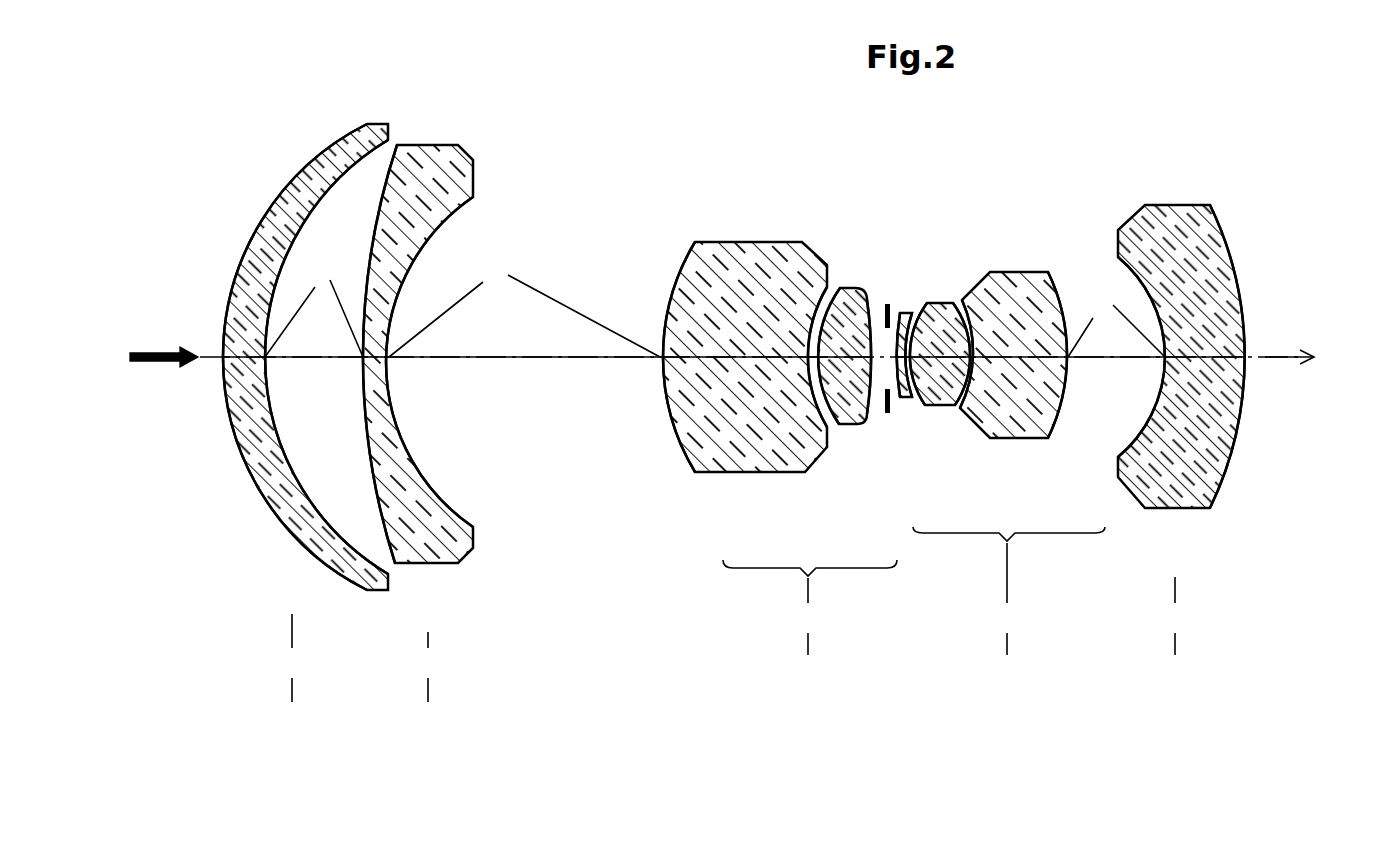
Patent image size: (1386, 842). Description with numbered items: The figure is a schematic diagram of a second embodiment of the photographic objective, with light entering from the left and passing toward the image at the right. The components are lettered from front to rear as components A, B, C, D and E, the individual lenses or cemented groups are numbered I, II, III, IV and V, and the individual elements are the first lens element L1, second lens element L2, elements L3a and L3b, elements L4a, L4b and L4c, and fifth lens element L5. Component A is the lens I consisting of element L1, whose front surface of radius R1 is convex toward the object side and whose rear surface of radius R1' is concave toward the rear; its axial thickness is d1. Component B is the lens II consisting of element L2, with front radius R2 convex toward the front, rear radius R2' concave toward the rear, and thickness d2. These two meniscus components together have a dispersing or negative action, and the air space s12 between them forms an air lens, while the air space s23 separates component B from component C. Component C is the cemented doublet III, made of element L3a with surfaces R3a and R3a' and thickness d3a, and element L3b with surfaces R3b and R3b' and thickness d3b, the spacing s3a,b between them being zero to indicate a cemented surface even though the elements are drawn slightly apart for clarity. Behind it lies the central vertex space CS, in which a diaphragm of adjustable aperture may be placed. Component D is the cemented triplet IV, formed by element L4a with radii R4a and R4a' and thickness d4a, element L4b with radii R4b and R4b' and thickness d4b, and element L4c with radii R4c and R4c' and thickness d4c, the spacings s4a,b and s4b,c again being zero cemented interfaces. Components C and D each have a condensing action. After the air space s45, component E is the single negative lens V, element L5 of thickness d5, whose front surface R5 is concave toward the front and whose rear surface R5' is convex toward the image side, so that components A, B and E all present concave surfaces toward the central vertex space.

The first lens element L1 is at (292, 515).
The second lens element L2 is at (428, 540).
The third-a lens element L3a is at (745, 455).
The third-b lens element L3b is at (850, 427).
The fourth-a lens element L4a is at (905, 405).
The fourth-b lens element L4b is at (945, 408).
The fourth-c lens element L4c is at (1040, 440).
The fifth lens element L5 is at (1175, 478).
The front surface radius of first element R1 is at (295, 357).
The rear surface radius of first element R1' is at (328, 316).
The front surface radius of second element R2 is at (398, 318).
The rear surface radius of second element R2' is at (451, 320).
The front surface radius of element 3a R3a is at (662, 332).
The rear surface radius of element 3a R3a' is at (816, 304).
The front surface radius of element 3b R3b is at (847, 286).
The rear surface radius of element 3b R3b' is at (876, 309).
The front surface radius of element 4a R4a is at (918, 286).
The rear surface radius of element 4a R4a' is at (923, 312).
The front surface radius of element 4b R4b is at (944, 311).
The rear surface radius of element 4b R4b' is at (975, 279).
The front surface radius of element 4c R4c is at (1005, 300).
The rear surface radius of element 4c R4c' is at (1077, 324).
The front surface radius of fifth element R5 is at (1131, 296).
The rear surface radius of fifth element R5' is at (1234, 328).
The axial thickness of first element d1 is at (244, 358).
The axial thickness of second element d2 is at (374, 365).
The axial thickness of element 3a d3a is at (735, 358).
The axial thickness of element 3b d3b is at (844, 358).
The axial thickness of element 4a d4a is at (892, 309).
The axial thickness of element 4b d4b is at (940, 358).
The axial thickness of element 4c d4c is at (1020, 358).
The axial thickness of fifth element d5 is at (1205, 358).
The spacing between first and second elements s12 is at (300, 360).
The spacing between second and third elements s23 is at (515, 360).
The spacing between elements 3a and 3b s3a,b is at (836, 432).
The spacing between elements 4a and 4b s4a,b is at (905, 400).
The spacing between elements 4b and 4c s4b,c is at (962, 412).
The spacing between fourth and fifth components s45 is at (1110, 360).
The central vertex space CS is at (887, 414).
The first lens I is at (291, 646).
The second lens II is at (427, 655).
The third lens III is at (810, 597).
The fourth lens IV is at (1009, 580).
The fifth lens V is at (1176, 605).
The first meniscus component A is at (292, 705).
The second meniscus component B is at (429, 705).
The first condensing component C is at (809, 661).
The second condensing component D is at (1010, 661).
The rear negative component E is at (1175, 661).